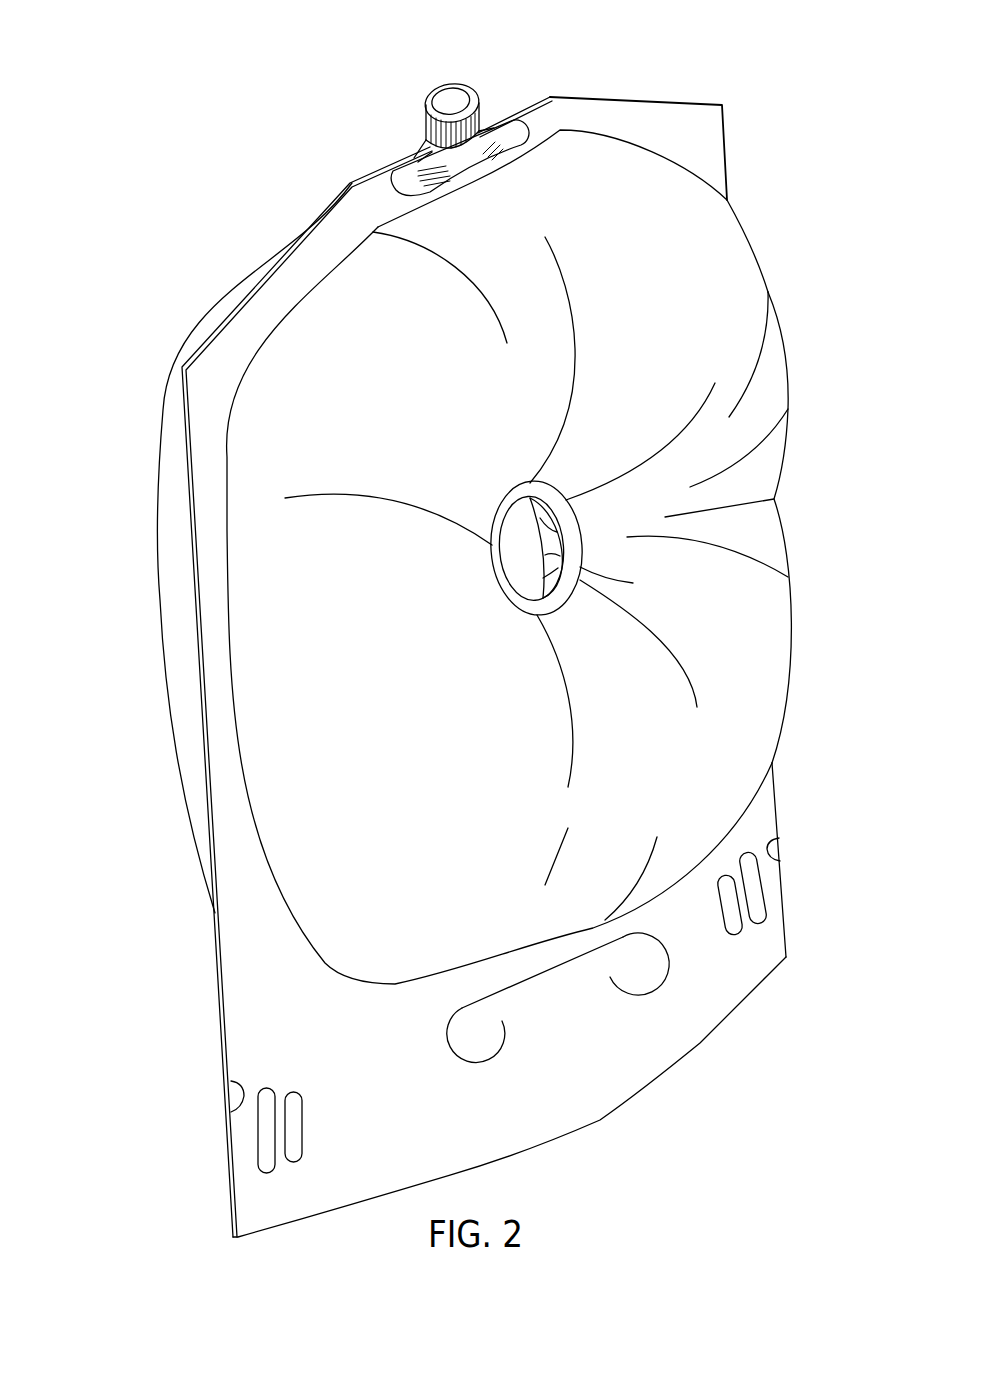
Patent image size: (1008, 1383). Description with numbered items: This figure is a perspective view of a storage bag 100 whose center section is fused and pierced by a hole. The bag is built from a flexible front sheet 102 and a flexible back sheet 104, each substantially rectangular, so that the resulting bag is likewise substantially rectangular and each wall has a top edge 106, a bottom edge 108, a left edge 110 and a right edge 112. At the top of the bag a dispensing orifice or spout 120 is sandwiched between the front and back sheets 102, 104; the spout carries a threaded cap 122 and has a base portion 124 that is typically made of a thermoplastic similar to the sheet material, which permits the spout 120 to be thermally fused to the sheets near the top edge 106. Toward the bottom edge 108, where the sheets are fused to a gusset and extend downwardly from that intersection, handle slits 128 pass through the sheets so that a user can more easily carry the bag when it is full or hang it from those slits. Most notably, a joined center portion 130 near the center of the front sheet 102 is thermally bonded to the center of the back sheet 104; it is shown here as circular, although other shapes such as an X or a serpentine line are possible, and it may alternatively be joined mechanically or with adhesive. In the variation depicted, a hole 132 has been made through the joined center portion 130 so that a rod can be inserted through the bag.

The flexible pouch assembly 100 is at (190, 160).
The flexible front sheet 102 is at (770, 291).
The flexible back sheet 104 is at (170, 489).
The top edge 106 is at (640, 100).
The bottom edge 108 is at (613, 1113).
The left edge 110 is at (206, 770).
The right edge 112 is at (773, 765).
The spout 120 is at (430, 147).
The threaded cap 122 is at (450, 95).
The base portion 124 is at (513, 123).
The handle slits 128 is at (446, 1036).
The joined center portion 130 is at (505, 585).
The hole 132 is at (539, 555).